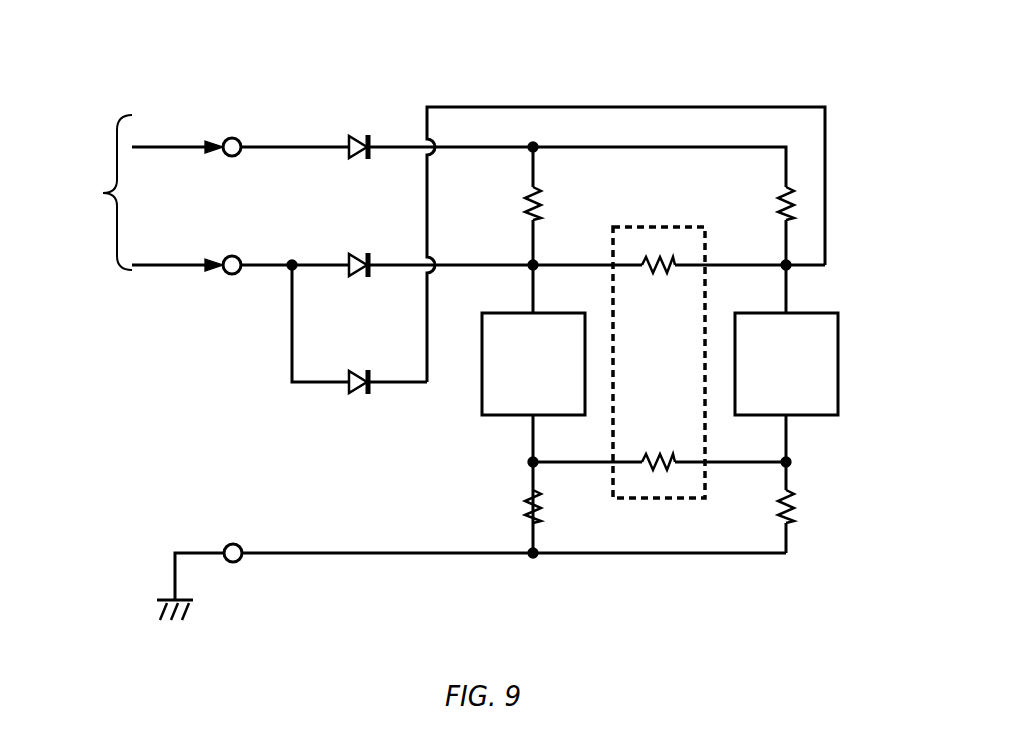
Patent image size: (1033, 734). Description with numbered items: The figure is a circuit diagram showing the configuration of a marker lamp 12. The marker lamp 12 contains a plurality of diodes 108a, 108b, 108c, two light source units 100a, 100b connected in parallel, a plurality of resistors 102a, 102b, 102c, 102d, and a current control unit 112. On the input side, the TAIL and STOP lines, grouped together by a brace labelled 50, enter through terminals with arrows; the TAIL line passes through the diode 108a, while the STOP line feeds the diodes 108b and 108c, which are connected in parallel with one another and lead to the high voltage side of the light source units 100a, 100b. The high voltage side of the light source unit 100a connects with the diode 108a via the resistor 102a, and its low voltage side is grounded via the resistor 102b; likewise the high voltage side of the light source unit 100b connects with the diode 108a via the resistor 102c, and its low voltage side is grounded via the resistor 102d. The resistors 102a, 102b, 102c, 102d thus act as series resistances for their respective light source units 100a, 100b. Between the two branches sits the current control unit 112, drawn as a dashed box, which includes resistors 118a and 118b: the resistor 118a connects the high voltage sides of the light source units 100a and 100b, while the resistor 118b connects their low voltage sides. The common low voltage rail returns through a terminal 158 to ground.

The marker lamp 12 is at (893, 46).
The vehicle side power supply 50 is at (89, 192).
The diode 108a is at (357, 136).
The diode 108b is at (357, 254).
The diode 108c is at (357, 371).
The resistor 102a is at (524, 203).
The resistor 102b is at (524, 513).
The resistor 102c is at (778, 203).
The resistor 102d is at (795, 507).
The current control unit 112 is at (643, 226).
The resistor 118a is at (656, 274).
The resistor 118b is at (665, 454).
The light source unit 100a is at (482, 395).
The light source unit 100b is at (838, 395).
The ground terminal 158 is at (233, 543).